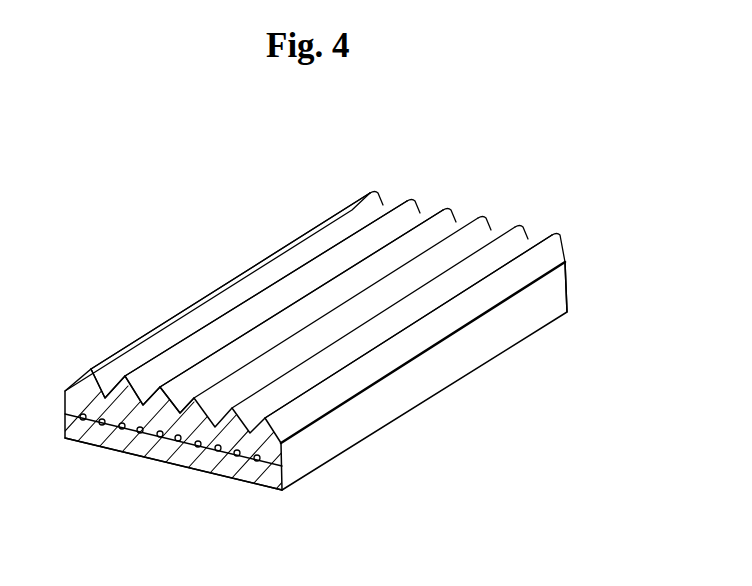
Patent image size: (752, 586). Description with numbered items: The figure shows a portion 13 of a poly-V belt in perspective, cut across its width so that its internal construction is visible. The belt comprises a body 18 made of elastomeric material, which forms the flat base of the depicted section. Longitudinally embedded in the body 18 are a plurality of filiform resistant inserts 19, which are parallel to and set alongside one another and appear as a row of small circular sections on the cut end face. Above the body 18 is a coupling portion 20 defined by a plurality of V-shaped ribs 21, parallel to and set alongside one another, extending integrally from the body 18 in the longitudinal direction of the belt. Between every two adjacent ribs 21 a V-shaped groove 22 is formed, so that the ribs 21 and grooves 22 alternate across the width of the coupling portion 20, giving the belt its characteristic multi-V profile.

The corrugated plate 13 is at (246, 250).
The body 18 is at (227, 481).
The filiform resistant inserts 19 is at (160, 440).
The coupling portion 20 is at (567, 233).
The V-shaped ribs 21 is at (384, 195).
The V-shaped grooves 22 is at (180, 396).